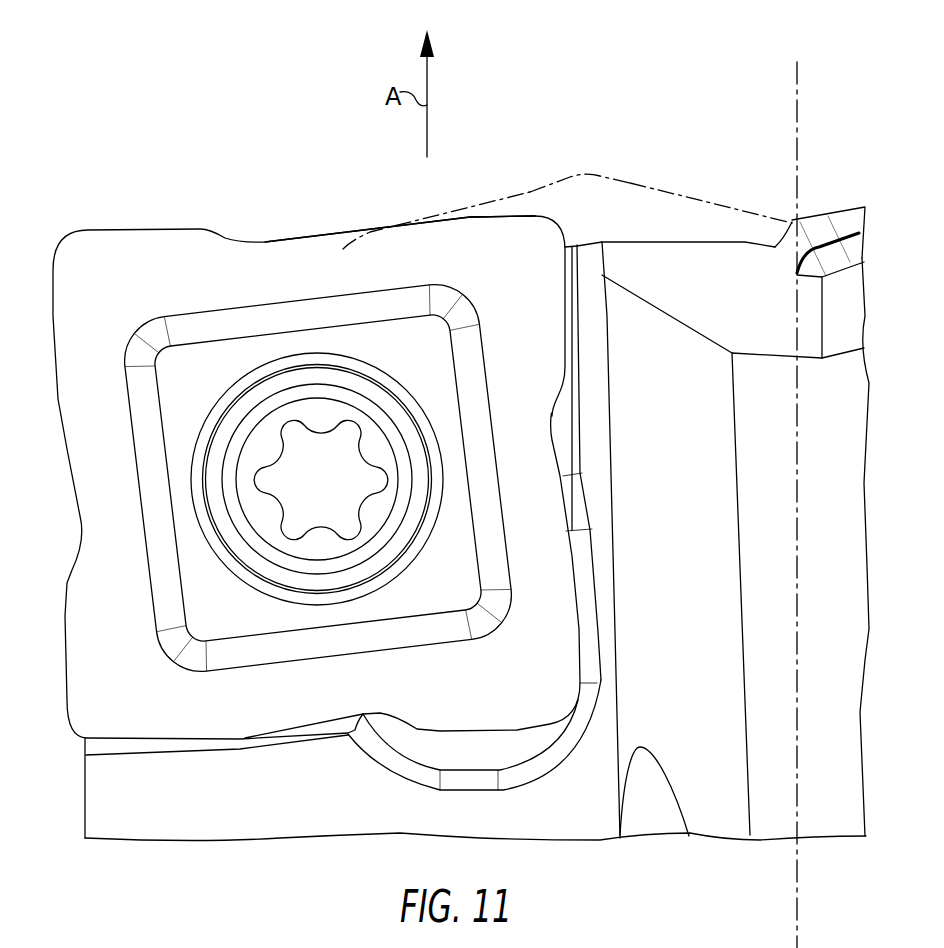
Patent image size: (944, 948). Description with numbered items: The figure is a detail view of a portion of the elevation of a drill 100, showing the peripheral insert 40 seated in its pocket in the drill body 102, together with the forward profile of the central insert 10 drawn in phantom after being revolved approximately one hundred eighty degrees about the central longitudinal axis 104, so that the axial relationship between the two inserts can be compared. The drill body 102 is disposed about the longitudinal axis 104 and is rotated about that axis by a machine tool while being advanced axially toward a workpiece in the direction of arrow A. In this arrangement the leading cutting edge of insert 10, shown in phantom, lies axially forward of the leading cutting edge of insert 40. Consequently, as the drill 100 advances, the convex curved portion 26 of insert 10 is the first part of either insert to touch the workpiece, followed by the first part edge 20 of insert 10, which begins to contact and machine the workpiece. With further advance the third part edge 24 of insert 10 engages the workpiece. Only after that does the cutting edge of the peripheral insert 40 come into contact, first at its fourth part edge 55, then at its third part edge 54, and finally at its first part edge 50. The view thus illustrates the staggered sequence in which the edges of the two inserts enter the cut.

The drill 100 is at (258, 76).
The first part edge 50 is at (160, 229).
The third part edge 54 is at (322, 228).
The fourth part edge 55 is at (498, 210).
The third part edge 24 is at (529, 195).
The convex curved portion 26 is at (582, 167).
The first part edge 20 is at (675, 189).
The insert 10 is at (845, 246).
The longitudinal axis 104 is at (797, 92).
The insert 40 is at (90, 632).
The drill body 102 is at (115, 783).